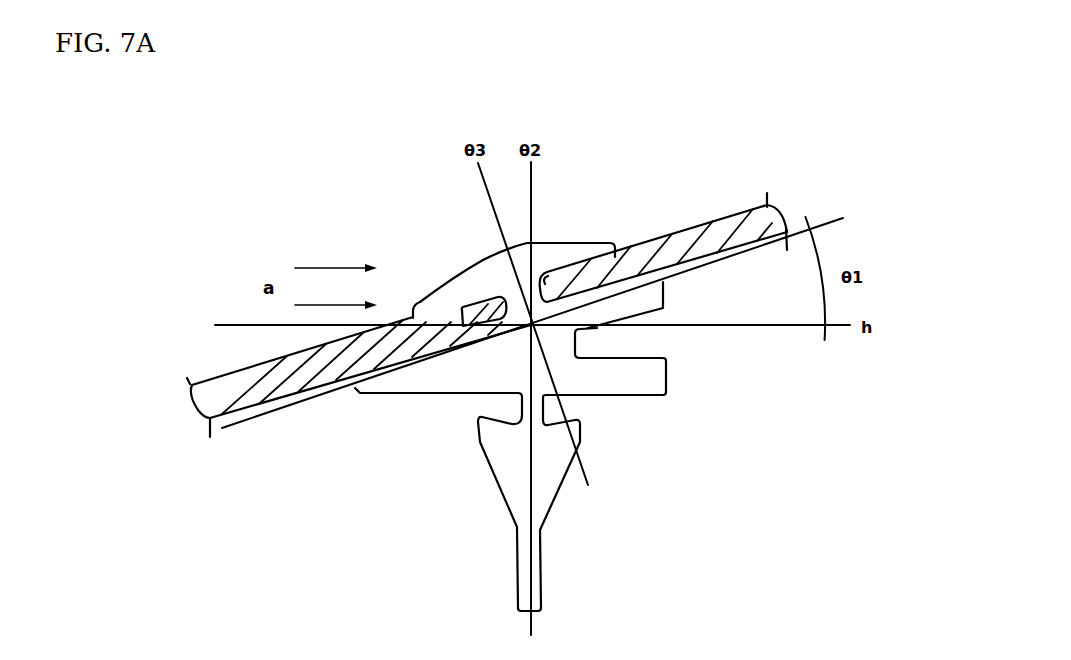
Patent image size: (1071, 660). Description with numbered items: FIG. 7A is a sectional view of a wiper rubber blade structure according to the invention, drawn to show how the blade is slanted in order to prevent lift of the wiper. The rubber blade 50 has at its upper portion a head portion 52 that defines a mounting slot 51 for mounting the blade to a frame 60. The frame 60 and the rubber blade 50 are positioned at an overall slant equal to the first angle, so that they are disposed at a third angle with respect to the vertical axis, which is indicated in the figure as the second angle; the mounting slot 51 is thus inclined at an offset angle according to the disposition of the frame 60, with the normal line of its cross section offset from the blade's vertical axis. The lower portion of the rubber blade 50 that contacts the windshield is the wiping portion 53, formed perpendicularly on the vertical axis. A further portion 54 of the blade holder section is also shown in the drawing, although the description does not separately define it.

The rubber blade 50 is at (548, 446).
The mounting slot 51 is at (467, 298).
The head portion 52 is at (582, 219).
The wiping portion 53 is at (566, 497).
The lower holder portion 54 is at (597, 328).
The frame 60 is at (727, 218).